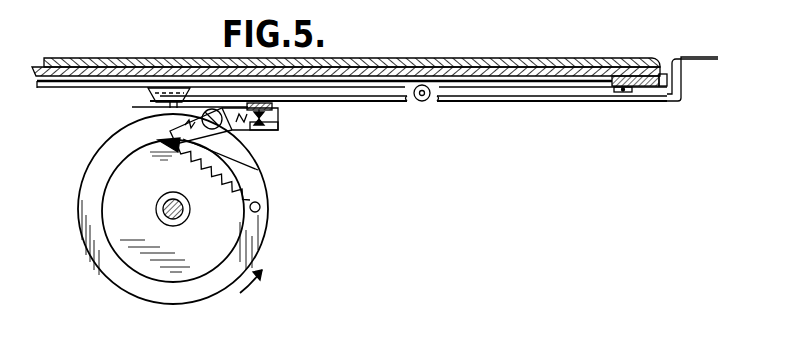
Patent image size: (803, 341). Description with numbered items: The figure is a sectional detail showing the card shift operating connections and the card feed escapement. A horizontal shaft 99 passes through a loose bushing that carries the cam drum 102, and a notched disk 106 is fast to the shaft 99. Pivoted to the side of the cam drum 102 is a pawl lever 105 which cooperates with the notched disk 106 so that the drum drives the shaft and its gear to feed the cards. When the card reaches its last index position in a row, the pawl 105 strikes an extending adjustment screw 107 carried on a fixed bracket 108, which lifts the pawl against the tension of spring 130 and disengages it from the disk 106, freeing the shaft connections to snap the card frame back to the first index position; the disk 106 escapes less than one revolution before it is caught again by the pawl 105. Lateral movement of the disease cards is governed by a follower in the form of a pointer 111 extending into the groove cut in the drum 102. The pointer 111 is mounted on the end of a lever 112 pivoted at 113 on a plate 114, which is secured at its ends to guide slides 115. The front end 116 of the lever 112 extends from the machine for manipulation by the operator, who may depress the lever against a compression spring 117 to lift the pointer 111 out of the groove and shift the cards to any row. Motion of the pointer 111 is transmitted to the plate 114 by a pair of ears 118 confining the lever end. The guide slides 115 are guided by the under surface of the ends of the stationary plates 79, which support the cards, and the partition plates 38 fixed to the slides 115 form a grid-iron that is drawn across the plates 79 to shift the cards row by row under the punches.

The partition plates 38 is at (371, 58).
The stationary plates 79 is at (483, 68).
The horizontal shaft 99 is at (168, 208).
The cam drum 102 is at (253, 247).
The pawl lever 105 is at (247, 128).
The notched disk 106 is at (247, 230).
The extending screw 107 is at (278, 123).
The fixed bracket 108 is at (272, 108).
The pointer 111 is at (132, 107).
The lever 112 is at (392, 101).
The pivot 113 is at (424, 102).
The plate 114 is at (53, 82).
The guide slides 115 is at (657, 82).
The front end 116 is at (702, 60).
The compression spring 117 is at (150, 96).
The ears 118 is at (188, 97).
The spring 130 is at (237, 177).